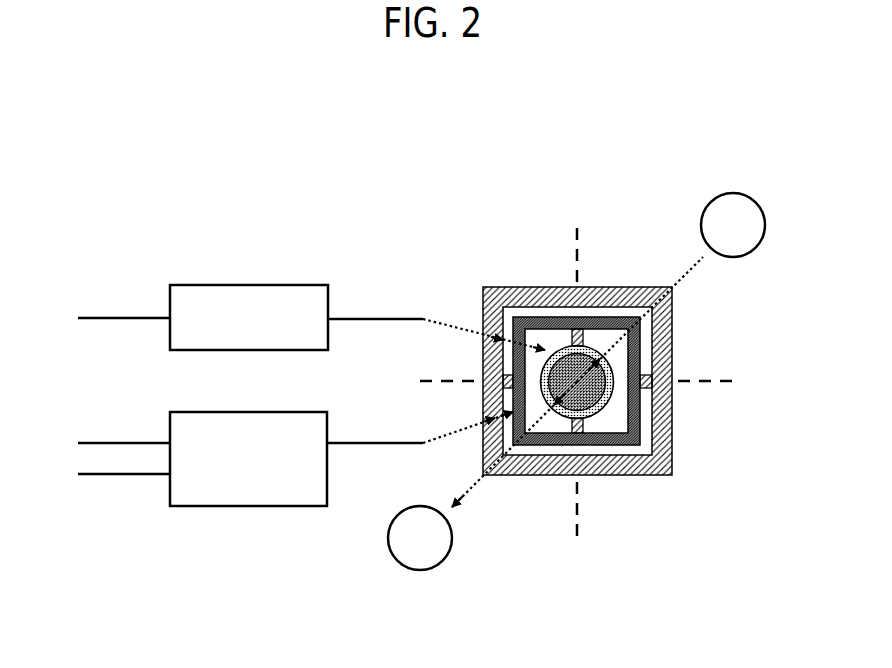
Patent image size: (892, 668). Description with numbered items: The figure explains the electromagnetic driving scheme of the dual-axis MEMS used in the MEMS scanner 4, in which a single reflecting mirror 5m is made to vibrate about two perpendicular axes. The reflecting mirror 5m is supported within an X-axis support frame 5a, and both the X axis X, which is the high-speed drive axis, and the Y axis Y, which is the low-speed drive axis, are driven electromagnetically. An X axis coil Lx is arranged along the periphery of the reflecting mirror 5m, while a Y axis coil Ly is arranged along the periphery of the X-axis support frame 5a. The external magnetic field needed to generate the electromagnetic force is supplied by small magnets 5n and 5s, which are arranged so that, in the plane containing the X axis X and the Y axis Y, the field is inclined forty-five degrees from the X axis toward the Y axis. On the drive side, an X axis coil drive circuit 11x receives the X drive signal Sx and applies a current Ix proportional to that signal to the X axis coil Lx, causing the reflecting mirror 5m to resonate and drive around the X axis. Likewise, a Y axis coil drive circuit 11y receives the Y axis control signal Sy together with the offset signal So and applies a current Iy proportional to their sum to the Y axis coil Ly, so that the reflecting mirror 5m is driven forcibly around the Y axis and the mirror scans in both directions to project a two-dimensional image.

The MEMS scanner 4 is at (380, 194).
The X axis coil drive circuit 11x is at (205, 285).
The Y axis coil drive circuit 11y is at (200, 506).
The X drive signal Sx is at (138, 317).
The Y axis control signal Sy is at (140, 443).
The offset signal So is at (140, 474).
The current Ix is at (348, 319).
The current Iy is at (343, 443).
The small magnet 5n is at (703, 218).
The small magnet 5s is at (430, 568).
The reflecting mirror 5m is at (660, 440).
The X-axis support frame 5a is at (590, 408).
The X axis coil Lx is at (643, 427).
The Y axis coil Ly is at (595, 443).
The X axis X is at (575, 403).
The Y axis Y is at (589, 384).